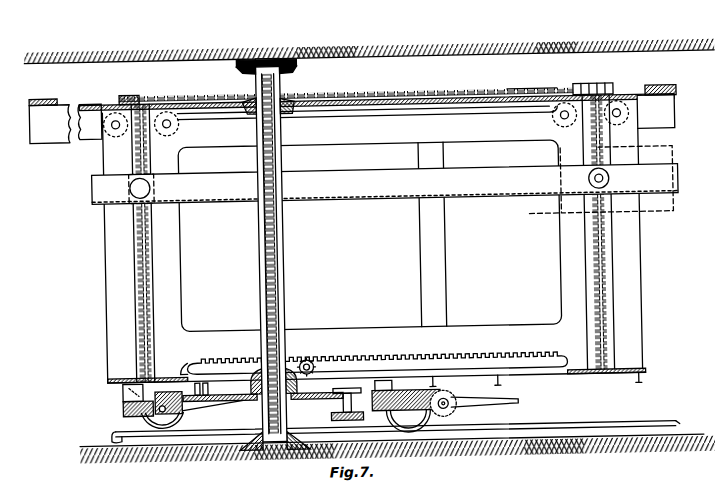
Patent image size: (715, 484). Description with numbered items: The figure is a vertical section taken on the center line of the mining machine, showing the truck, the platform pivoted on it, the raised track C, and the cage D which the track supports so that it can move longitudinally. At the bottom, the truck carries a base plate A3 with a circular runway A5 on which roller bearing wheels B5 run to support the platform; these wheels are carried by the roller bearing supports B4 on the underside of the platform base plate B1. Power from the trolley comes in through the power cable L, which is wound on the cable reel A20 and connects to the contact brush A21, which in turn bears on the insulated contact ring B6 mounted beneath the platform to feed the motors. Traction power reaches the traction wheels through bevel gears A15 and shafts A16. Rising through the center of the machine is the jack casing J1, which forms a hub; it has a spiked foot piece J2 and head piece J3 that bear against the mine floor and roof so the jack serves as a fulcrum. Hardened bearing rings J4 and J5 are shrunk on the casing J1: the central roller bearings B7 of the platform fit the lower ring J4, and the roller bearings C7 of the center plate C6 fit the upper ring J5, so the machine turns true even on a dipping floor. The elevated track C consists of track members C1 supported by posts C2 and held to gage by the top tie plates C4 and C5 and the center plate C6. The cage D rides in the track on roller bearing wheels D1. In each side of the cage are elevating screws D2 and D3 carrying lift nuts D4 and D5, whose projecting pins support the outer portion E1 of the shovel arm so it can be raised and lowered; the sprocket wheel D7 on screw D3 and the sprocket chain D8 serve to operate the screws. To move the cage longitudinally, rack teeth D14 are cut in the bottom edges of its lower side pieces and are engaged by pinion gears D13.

The top tie plate C4 is at (56, 98).
The track member C1 is at (100, 98).
The head piece J3 is at (252, 66).
The bearing ring J5 is at (256, 98).
The center plate C6 is at (288, 96).
The roller bearings C7 is at (290, 110).
The sprocket chain D8 is at (517, 94).
The roller bearing wheels D1 is at (114, 124).
The sprocket wheel D7 is at (603, 86).
The top tie plate C5 is at (673, 86).
The raised track C is at (670, 117).
The outer portion of shovel arm E1 is at (680, 186).
The elevating screw D2 is at (137, 168).
The lift nut D4 is at (131, 186).
The cage D is at (105, 233).
The jack casing J1 is at (262, 226).
The posts C2 is at (445, 240).
The lift nut D5 is at (595, 192).
The elevating screw D3 is at (593, 255).
The bearing ring J4 is at (262, 364).
The pinion gear D13 is at (330, 347).
The rack teeth D14 is at (378, 356).
The insulated contact ring B6 is at (376, 388).
The central roller bearings B7 is at (250, 382).
The base plate B1 is at (118, 378).
The roller bearing supports B4 is at (120, 390).
The roller bearing wheels B5 is at (152, 394).
The circular runway A5 is at (150, 402).
The base plate A3 is at (140, 414).
The contact brush A21 is at (228, 405).
The foot piece J2 is at (252, 438).
The bevel gears A15 is at (352, 421).
The shafts A16 is at (405, 420).
The cable reel A20 is at (455, 410).
The power cable L is at (480, 404).